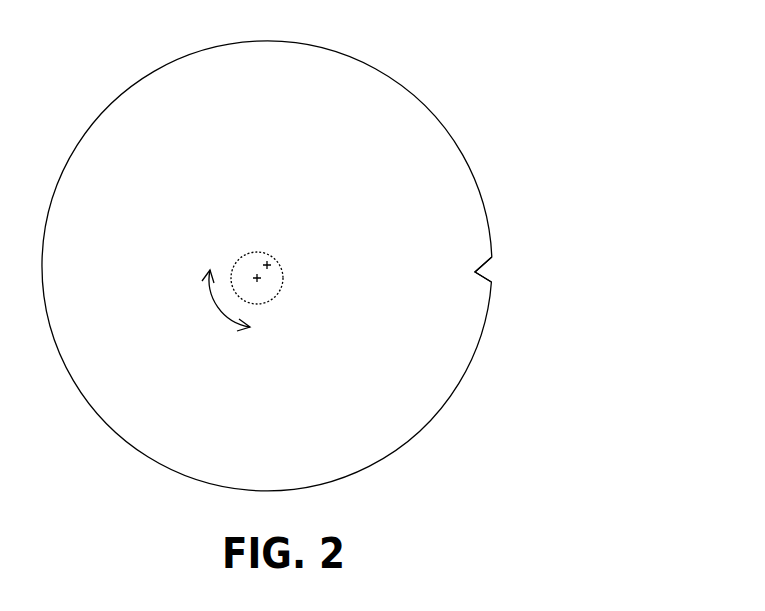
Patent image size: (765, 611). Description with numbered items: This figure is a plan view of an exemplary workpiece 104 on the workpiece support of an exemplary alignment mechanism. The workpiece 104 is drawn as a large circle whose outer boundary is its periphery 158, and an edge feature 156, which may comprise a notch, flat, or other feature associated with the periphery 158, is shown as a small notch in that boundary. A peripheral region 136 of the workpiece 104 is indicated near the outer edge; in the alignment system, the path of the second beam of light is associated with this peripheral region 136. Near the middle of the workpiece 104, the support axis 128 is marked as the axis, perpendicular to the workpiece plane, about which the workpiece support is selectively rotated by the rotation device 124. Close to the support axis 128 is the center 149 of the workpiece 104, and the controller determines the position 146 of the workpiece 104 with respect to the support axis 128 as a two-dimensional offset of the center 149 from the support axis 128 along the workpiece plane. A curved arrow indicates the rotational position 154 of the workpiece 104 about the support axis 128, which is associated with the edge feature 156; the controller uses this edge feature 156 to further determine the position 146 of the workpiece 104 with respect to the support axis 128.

The workpiece 104 is at (433, 111).
The edge feature 156 is at (488, 282).
The periphery 158 is at (475, 178).
The position 146 is at (497, 347).
The peripheral region 136 is at (436, 415).
The rotation device 124 is at (277, 295).
The support axis 128 is at (257, 278).
The center 149 is at (267, 265).
The rotational position 154 is at (215, 305).